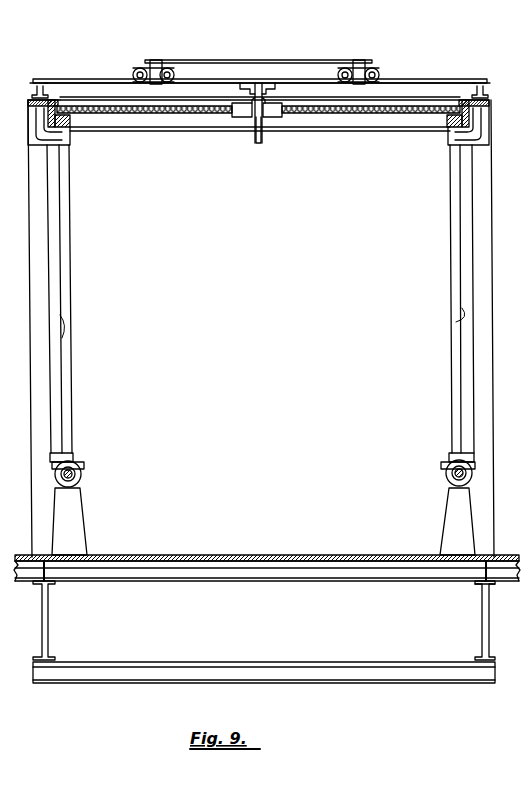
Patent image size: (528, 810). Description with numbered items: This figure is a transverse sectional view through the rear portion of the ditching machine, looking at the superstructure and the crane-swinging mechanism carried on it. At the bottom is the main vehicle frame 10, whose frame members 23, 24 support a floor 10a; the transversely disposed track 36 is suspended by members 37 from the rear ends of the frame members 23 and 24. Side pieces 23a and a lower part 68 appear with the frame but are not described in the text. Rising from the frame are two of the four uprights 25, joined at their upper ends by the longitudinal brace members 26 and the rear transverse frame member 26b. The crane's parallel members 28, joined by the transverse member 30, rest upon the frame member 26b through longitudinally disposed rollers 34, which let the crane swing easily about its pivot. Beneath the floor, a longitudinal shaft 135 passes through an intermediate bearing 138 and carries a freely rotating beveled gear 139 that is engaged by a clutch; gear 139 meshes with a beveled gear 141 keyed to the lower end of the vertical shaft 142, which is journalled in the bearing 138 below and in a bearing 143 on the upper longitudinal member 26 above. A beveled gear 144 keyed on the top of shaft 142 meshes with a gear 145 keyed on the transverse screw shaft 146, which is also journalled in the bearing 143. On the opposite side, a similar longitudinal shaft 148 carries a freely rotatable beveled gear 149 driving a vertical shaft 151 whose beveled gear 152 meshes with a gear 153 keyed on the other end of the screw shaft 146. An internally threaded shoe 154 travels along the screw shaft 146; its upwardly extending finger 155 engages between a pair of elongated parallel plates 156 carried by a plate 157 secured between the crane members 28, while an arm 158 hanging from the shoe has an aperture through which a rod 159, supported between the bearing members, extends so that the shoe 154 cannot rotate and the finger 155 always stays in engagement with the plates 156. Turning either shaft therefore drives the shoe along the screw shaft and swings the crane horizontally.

The main vehicle frame 10 is at (280, 578).
The floor 10a is at (296, 559).
The frame member 23 is at (482, 577).
The side frame 23a is at (34, 126).
The frame member 24 is at (46, 577).
The upright 25 is at (40, 290).
The longitudinal brace member 26 is at (36, 92).
The rear transverse frame member 26b is at (371, 86).
The crane member 28 is at (158, 58).
The transverse member 30 is at (195, 78).
The roller 34 is at (135, 70).
The track 36 is at (197, 679).
The suspending member 37 is at (50, 630).
The support 68 is at (9, 706).
The longitudinally disposed shaft 135 is at (452, 480).
The intermediate bearing 138 is at (71, 523).
The beveled gear 139 is at (446, 463).
The beveled gear 141 is at (455, 452).
The vertically disposed shaft 142 is at (452, 355).
The bearing 143 is at (478, 130).
The beveled gear 144 is at (446, 116).
The beveled gear 145 is at (462, 100).
The screw shaft 146 is at (181, 108).
The longitudinally disposed shaft 148 is at (81, 478).
The beveled gear 149 is at (85, 466).
The vertically disposed shaft 151 is at (63, 352).
The beveled gear 152 is at (73, 122).
The beveled gear 153 is at (51, 108).
The screw threaded shoe 154 is at (236, 112).
The finger 155 is at (258, 86).
The plate 156 is at (241, 86).
The plate 157 is at (315, 79).
The arm 158 is at (258, 144).
The rod 159 is at (310, 130).